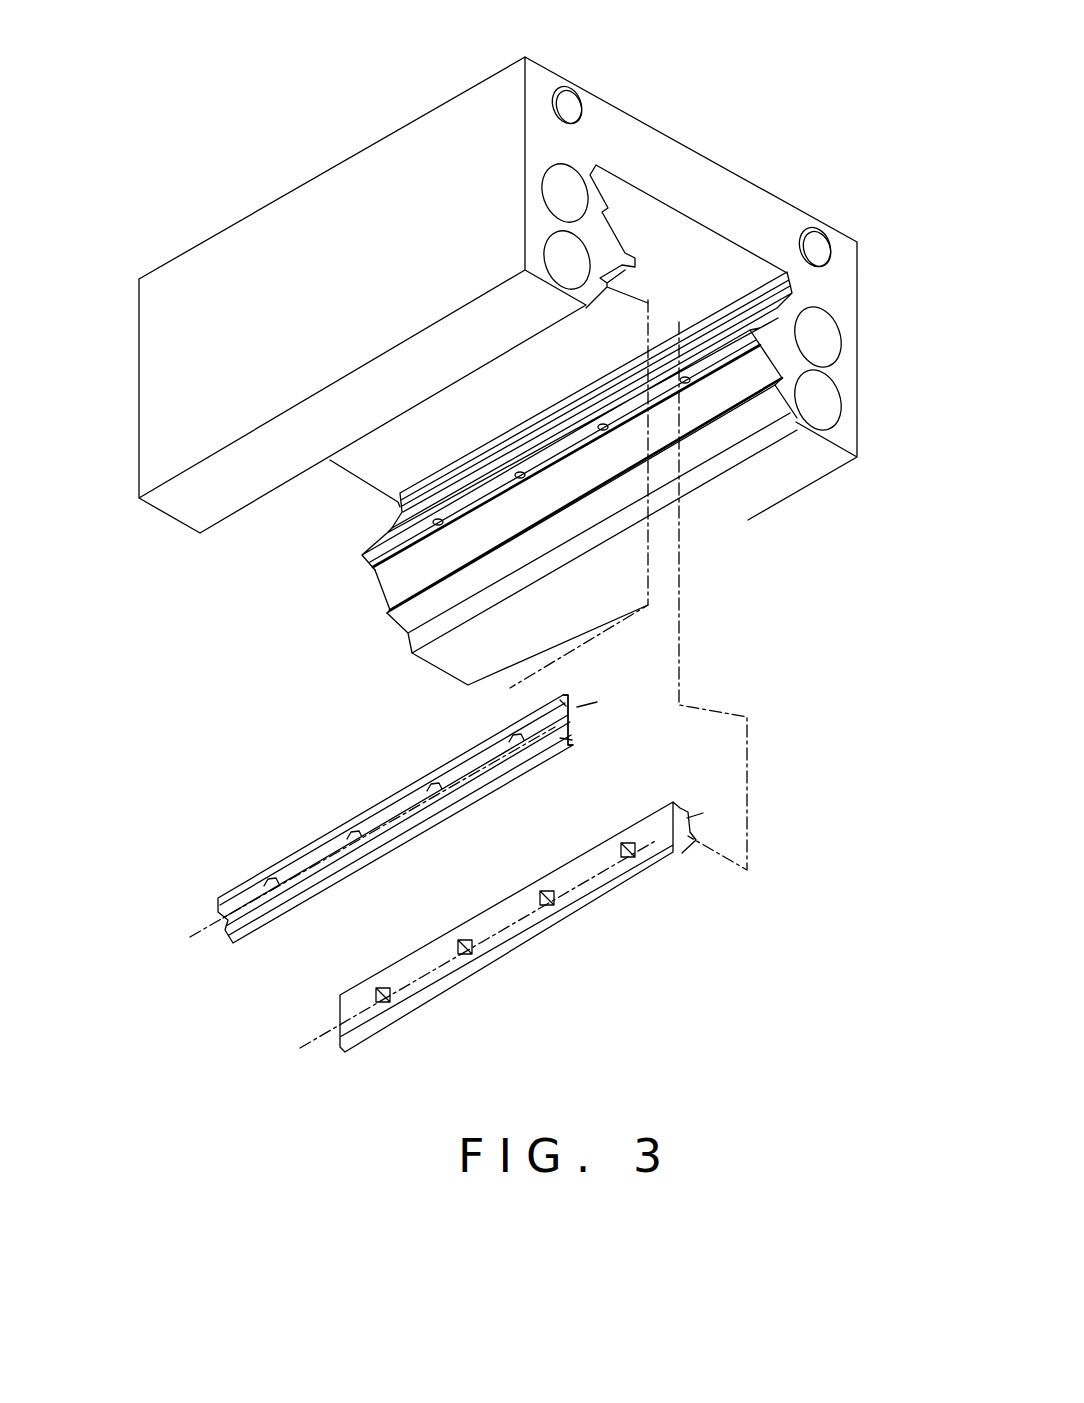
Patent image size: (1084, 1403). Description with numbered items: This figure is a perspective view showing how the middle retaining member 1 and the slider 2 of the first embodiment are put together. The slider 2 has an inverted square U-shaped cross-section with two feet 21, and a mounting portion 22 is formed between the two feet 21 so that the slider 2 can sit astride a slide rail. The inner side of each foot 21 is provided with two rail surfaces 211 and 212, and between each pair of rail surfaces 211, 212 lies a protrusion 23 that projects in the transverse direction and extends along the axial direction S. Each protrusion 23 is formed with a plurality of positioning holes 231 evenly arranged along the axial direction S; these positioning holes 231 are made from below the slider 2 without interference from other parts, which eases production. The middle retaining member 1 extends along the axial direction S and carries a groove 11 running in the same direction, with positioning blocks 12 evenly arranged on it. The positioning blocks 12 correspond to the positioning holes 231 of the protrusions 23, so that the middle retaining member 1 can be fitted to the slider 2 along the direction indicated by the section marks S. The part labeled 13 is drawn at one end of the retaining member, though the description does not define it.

The middle retaining member 1 is at (443, 890).
The groove 11 is at (463, 773).
The positioning blocks 12 is at (430, 788).
The end stop 13 is at (575, 743).
The slider 2 is at (663, 158).
The feet 21 is at (543, 213).
The mounting portion 22 is at (687, 240).
The rail surface 211 is at (742, 335).
The rail surface 212 is at (732, 385).
The protrusion 23 is at (722, 385).
The positioning holes 231 is at (703, 363).
The axial direction S is at (583, 708).